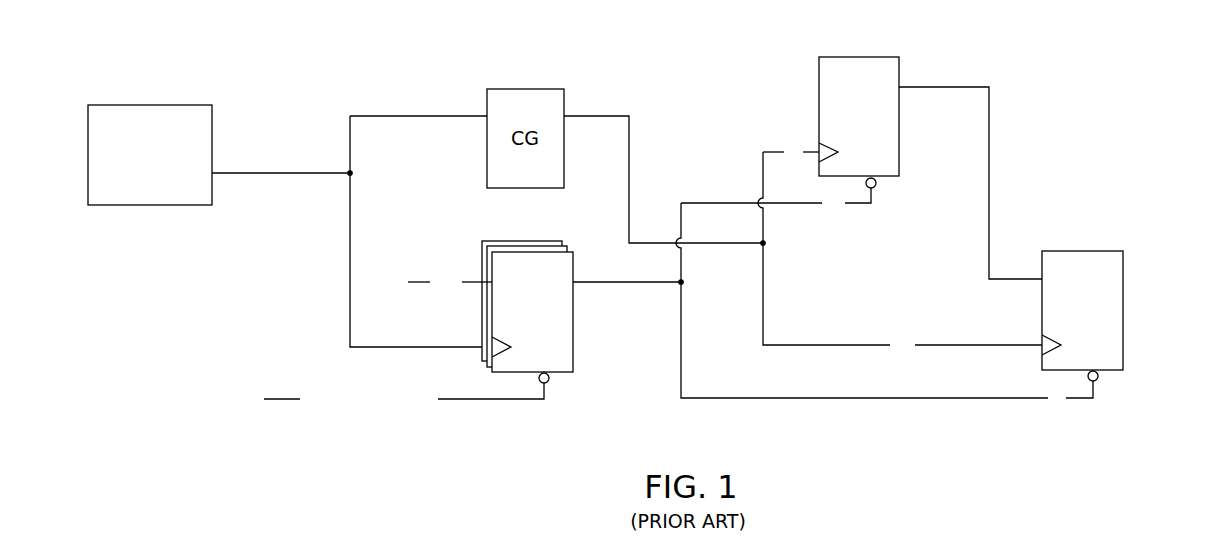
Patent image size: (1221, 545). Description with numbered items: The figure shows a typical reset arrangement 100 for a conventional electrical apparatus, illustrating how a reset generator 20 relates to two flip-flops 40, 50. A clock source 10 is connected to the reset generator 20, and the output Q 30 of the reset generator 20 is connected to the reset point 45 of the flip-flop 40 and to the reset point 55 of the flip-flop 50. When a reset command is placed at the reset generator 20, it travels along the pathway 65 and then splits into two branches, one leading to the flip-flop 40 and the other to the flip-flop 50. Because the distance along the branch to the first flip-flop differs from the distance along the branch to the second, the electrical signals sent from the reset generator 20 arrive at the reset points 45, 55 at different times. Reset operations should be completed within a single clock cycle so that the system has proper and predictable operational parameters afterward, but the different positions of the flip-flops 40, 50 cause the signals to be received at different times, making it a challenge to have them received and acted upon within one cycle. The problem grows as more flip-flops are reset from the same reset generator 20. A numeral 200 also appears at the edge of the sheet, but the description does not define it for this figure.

The clock source 10 is at (212, 130).
The reset generator 20 is at (563, 374).
The output Q 30 is at (590, 285).
The flip-flop 40 is at (899, 72).
The reset point 45 is at (885, 183).
The flip-flop 50 is at (1123, 309).
The reset point 55 is at (1110, 378).
The pathway 65 is at (640, 281).
The reset arrangement 100 is at (1106, 87).
The circuit 200 is at (945, 544).